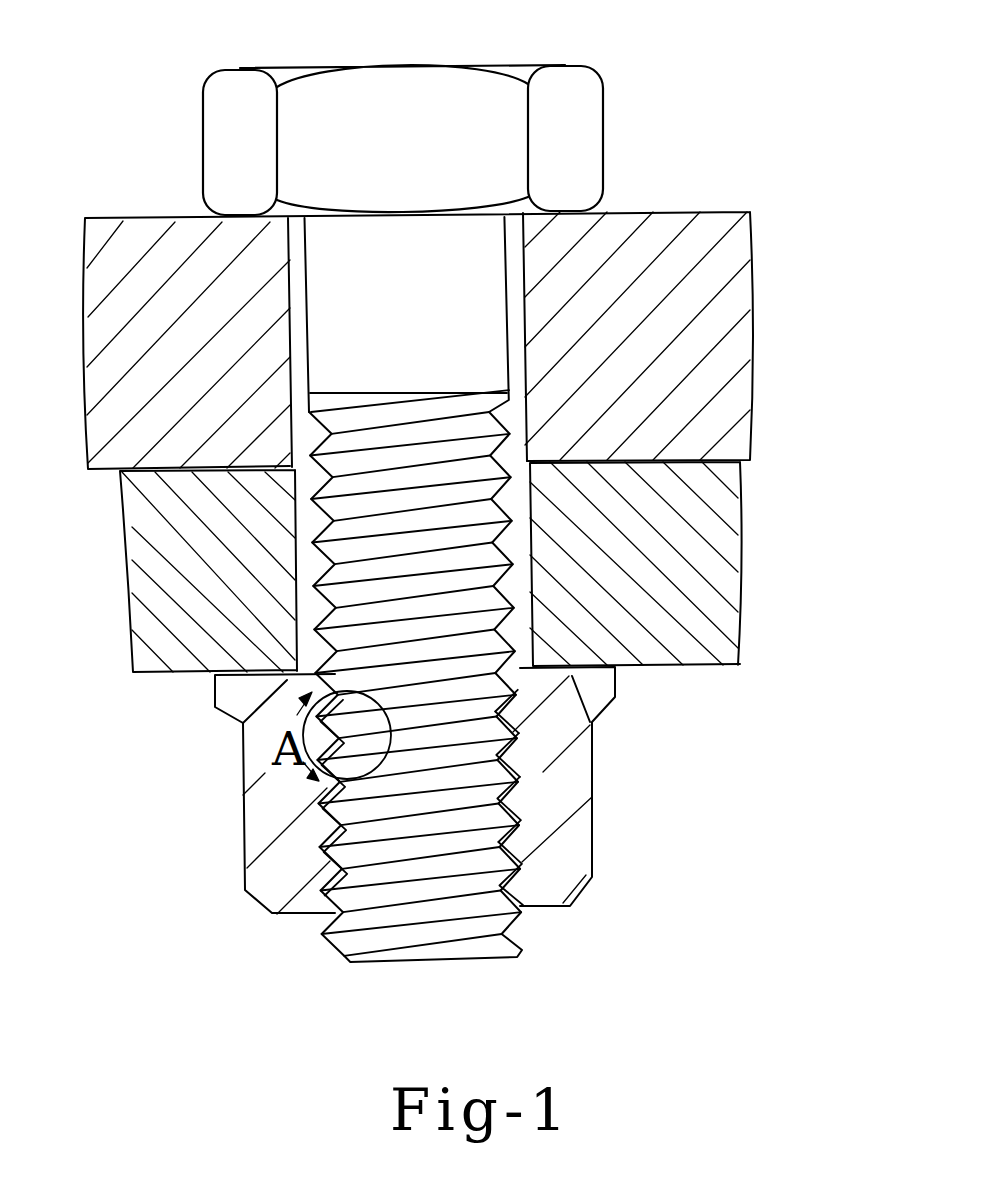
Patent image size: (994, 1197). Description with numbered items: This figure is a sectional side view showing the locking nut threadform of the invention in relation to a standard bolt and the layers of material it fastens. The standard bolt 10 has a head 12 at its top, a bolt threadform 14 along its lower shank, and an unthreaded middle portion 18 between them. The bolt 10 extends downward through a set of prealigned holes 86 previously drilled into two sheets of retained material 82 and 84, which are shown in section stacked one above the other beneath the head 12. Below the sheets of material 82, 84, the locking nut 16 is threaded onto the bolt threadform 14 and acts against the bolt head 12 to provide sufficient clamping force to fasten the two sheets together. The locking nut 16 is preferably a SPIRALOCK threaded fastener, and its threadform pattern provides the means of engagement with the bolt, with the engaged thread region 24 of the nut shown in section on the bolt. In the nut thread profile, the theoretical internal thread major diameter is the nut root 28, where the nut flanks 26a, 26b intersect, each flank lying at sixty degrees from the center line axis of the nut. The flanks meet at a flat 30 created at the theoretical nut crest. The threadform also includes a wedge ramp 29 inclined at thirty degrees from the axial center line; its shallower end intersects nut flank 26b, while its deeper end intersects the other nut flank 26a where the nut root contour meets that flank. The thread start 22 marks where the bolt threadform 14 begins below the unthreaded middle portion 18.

The bolt 10 is at (405, 995).
The head 12 is at (558, 140).
The threadform 14 is at (357, 940).
The locking nut 16 is at (240, 848).
The unthreaded middle portion 18 is at (363, 330).
The thread start of bolt 22 is at (490, 393).
The internal thread of nut 24 is at (337, 800).
The nut flank 26a is at (535, 749).
The nut flank 26b is at (515, 748).
The nut root 28 is at (530, 818).
The wedge ramp 29 is at (515, 708).
The flat 30 is at (512, 908).
The sheet of material 82 is at (727, 355).
The sheet of material 84 is at (150, 596).
The prealigned holes 86 is at (298, 273).